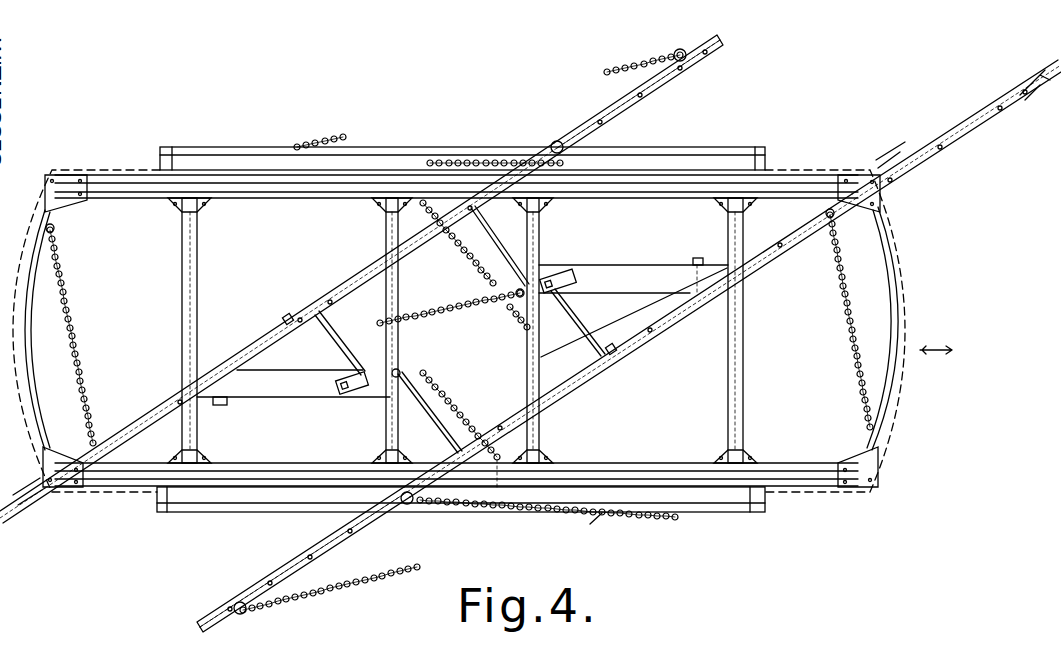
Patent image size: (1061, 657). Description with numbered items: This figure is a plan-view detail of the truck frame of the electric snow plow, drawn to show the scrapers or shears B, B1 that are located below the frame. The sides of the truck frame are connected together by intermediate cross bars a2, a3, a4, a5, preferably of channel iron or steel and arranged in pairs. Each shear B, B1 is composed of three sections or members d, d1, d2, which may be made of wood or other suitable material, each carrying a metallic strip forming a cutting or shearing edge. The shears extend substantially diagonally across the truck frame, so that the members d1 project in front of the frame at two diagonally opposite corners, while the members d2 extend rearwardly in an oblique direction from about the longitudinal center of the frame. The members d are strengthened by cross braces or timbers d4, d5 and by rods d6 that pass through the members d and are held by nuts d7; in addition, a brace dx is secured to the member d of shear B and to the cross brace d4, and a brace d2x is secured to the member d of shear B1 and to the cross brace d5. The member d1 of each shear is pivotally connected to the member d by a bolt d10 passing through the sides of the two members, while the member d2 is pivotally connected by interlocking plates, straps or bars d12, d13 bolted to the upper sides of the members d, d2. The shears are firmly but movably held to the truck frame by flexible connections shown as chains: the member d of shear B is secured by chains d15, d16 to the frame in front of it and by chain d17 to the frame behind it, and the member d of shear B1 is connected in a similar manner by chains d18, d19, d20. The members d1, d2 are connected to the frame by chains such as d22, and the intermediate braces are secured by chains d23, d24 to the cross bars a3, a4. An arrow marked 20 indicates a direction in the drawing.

The intermediate cross bar a2 is at (728, 382).
The intermediate cross bar a3 is at (540, 418).
The intermediate cross bar a4 is at (386, 234).
The intermediate cross bar a5 is at (190, 300).
The scraper or shear B is at (631, 345).
The scraper or shear B1 is at (324, 288).
The shear member d is at (289, 318).
The shear member d1 is at (958, 138).
The shear member d2 is at (672, 82).
The brace d2x is at (265, 393).
The cross brace or timber d4 is at (577, 330).
The cross brace or timber d5 is at (342, 338).
The rod d6 is at (441, 247).
The nut d7 is at (318, 293).
The bolt d10 is at (900, 183).
The interlocking plate, strap or bar d12 is at (556, 141).
The interlocking plate, strap or bar d13 is at (590, 128).
The chain d15 is at (838, 262).
The chain d16 is at (470, 515).
The chain d17 is at (458, 245).
The chain d18 is at (72, 322).
The chain d19 is at (493, 160).
The chain d20 is at (444, 426).
The chain d22 is at (610, 71).
The chain d23 is at (508, 325).
The chain d24 is at (470, 307).
The brace dx is at (672, 268).
The direction arrow 20 is at (936, 361).